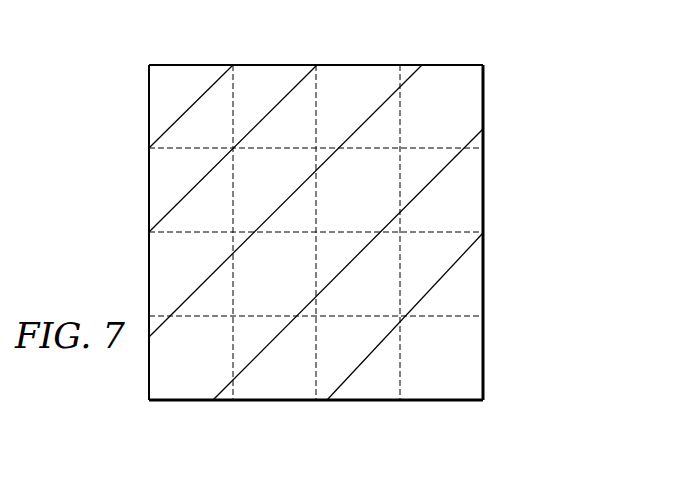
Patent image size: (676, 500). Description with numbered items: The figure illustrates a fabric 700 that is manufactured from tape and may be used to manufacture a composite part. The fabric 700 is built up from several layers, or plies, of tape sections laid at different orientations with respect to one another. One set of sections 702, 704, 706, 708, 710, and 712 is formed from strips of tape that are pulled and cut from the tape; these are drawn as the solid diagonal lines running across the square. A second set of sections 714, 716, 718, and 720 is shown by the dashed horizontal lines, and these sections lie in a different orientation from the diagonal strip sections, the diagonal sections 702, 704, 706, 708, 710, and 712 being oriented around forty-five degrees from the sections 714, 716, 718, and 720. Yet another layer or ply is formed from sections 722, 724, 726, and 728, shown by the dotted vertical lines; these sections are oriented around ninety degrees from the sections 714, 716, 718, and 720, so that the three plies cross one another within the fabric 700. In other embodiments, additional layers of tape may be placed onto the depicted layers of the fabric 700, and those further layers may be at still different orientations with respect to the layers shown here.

The fabric 700 is at (554, 212).
The section 702 is at (183, 72).
The section 704 is at (267, 72).
The section 706 is at (363, 72).
The section 708 is at (447, 72).
The section 710 is at (473, 265).
The section 712 is at (473, 347).
The section 714 is at (485, 103).
The section 716 is at (485, 187).
The section 718 is at (485, 297).
The section 720 is at (485, 379).
The section 722 is at (188, 402).
The section 724 is at (272, 402).
The section 726 is at (362, 402).
The section 728 is at (445, 402).